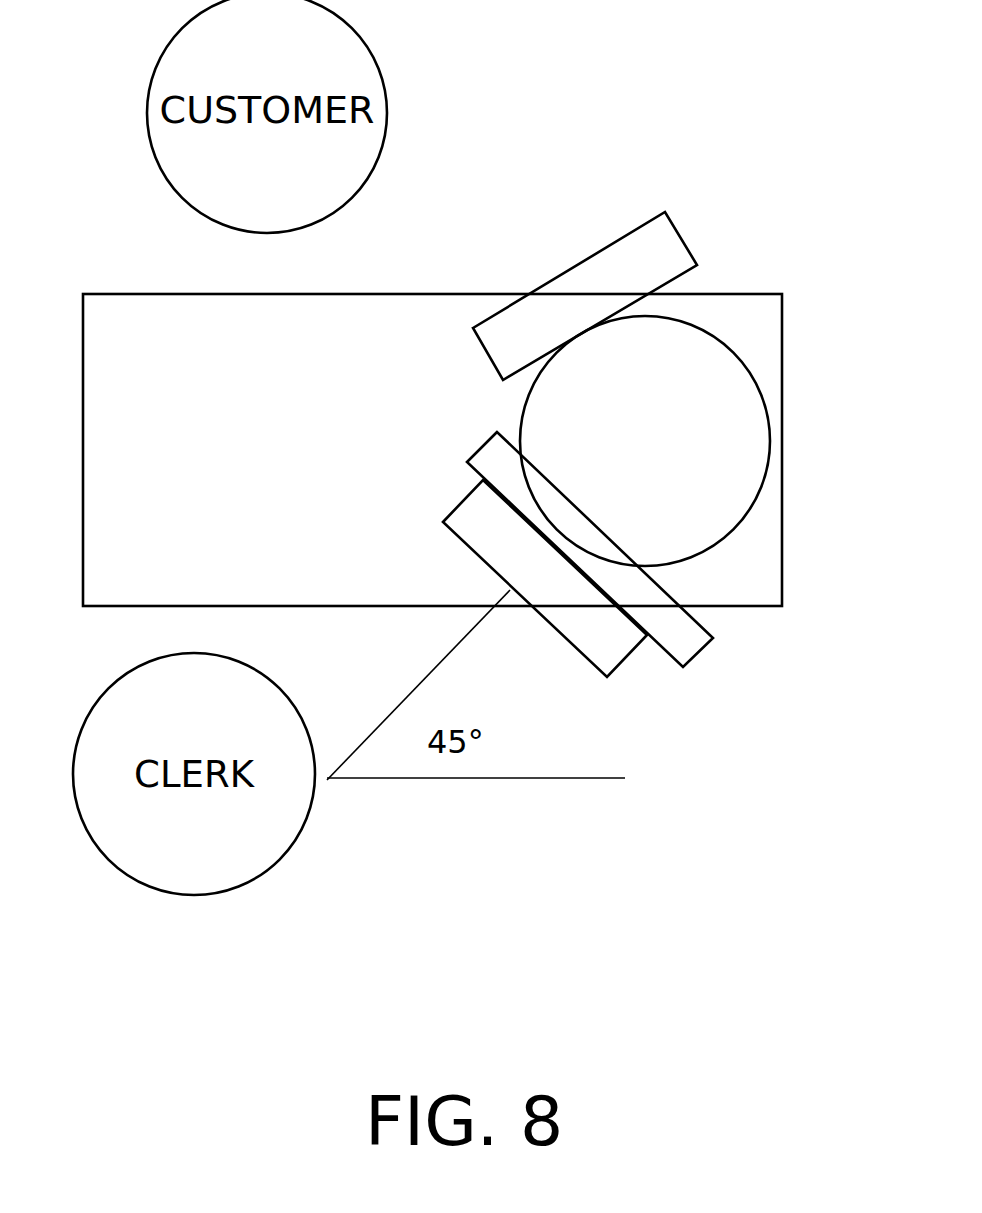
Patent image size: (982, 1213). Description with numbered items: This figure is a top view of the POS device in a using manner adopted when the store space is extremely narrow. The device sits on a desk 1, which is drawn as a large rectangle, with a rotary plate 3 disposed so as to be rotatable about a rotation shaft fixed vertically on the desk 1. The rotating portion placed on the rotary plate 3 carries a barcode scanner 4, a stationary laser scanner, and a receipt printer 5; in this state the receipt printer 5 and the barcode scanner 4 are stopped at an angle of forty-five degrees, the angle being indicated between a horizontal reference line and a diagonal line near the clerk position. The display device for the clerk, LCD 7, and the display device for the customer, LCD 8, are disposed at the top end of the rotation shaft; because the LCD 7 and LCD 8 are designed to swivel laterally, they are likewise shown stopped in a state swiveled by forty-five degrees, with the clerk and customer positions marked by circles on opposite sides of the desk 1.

The desk 1 is at (117, 543).
The rotary plate 3 is at (740, 402).
The barcode scanner 4 is at (638, 571).
The receipt printer 5 is at (688, 647).
The LCD (display device for clerk) 7 is at (613, 652).
The LCD (display device for customer) 8 is at (645, 252).